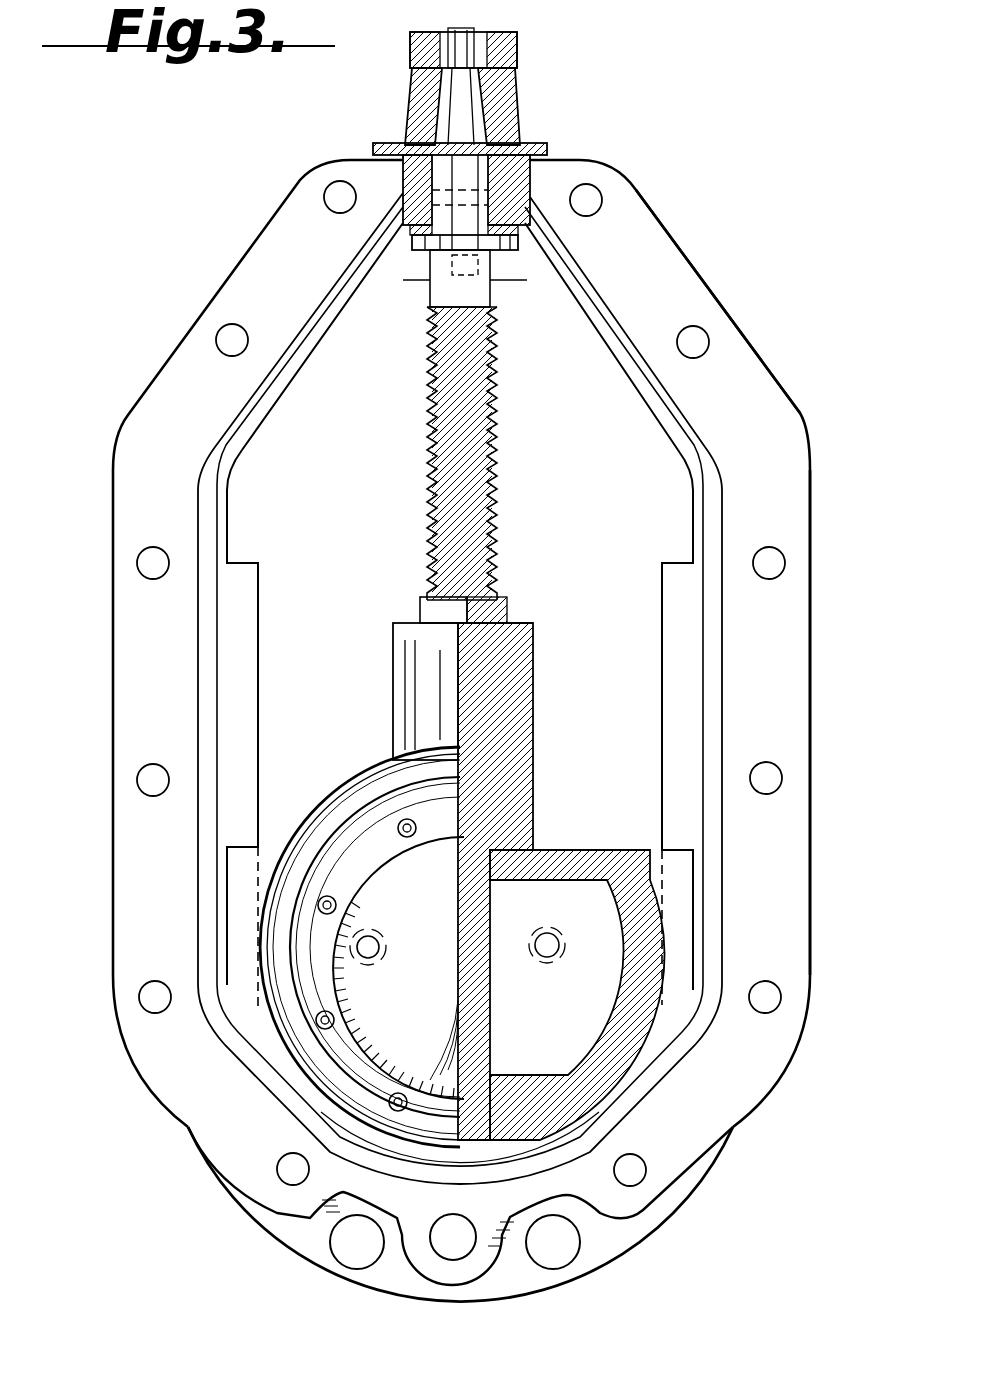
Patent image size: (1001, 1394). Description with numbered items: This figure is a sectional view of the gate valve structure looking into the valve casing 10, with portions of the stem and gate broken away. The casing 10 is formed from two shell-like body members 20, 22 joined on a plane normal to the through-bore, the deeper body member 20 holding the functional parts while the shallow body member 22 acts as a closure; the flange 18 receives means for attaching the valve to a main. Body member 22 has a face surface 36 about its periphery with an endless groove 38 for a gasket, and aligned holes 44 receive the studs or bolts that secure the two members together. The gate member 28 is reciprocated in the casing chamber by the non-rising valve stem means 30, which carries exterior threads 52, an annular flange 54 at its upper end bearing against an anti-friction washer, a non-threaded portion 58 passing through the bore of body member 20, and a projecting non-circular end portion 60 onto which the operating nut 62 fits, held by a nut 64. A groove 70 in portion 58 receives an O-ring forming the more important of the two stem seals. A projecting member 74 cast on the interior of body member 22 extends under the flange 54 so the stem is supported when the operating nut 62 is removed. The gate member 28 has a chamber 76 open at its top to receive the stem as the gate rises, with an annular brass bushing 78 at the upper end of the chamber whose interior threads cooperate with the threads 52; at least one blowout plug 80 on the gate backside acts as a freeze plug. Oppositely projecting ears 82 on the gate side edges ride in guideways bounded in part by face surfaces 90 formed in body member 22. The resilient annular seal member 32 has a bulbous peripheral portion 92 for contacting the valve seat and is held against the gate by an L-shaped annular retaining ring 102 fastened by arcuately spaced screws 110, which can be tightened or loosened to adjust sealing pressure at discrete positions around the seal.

The valve casing 10 is at (776, 368).
The flange 18 is at (640, 1247).
The body member 20 is at (530, 170).
The body member 22 is at (697, 267).
The gate member 28 is at (393, 700).
The valve stem means 30 is at (503, 430).
The resilient annular seal member 32 is at (353, 797).
The face surface 36 is at (790, 703).
The endless groove 38 is at (298, 333).
The holes 44 is at (782, 556).
The exterior threads 52 is at (507, 465).
The annular flange 54 is at (427, 268).
The non-threaded portion 58 is at (420, 272).
The end portion 60 is at (520, 87).
The operating nut 62 is at (520, 110).
The nut 64 is at (488, 37).
The groove 70 is at (460, 183).
The projecting member 74 is at (523, 290).
The chamber 76 is at (500, 848).
The annular brass bushing 78 is at (507, 603).
The blowout plug 80 is at (370, 958).
The ears 82 is at (243, 845).
The face surfaces 90 is at (251, 590).
The bulbous peripheral portion 92 is at (280, 883).
The annular retaining ring 102 is at (398, 968).
The screws 110 is at (342, 908).